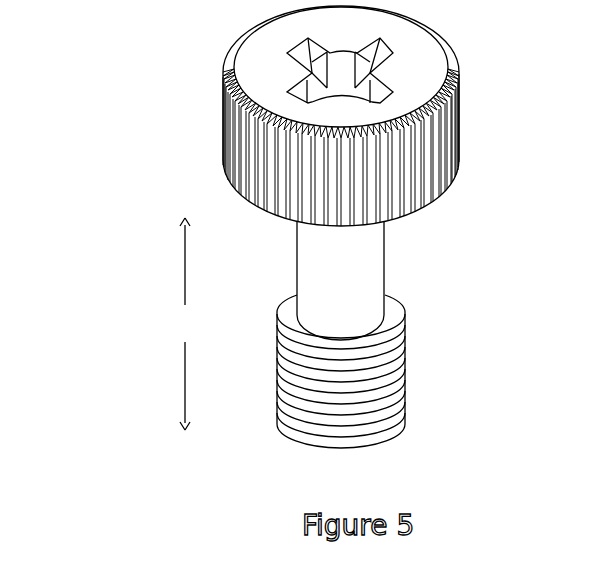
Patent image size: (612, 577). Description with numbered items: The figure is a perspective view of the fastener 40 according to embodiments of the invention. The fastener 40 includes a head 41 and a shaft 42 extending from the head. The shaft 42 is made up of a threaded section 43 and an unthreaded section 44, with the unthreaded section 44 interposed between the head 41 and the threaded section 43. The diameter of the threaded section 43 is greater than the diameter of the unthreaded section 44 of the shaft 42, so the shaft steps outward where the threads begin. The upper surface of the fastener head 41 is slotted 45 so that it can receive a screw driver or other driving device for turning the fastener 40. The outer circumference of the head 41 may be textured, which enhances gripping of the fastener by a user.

The fastener 40 is at (283, 238).
The head 41 is at (458, 128).
The shaft 42 is at (188, 324).
The threaded section 43 is at (408, 363).
The unthreaded section 44 is at (385, 261).
The slot 45 is at (378, 72).